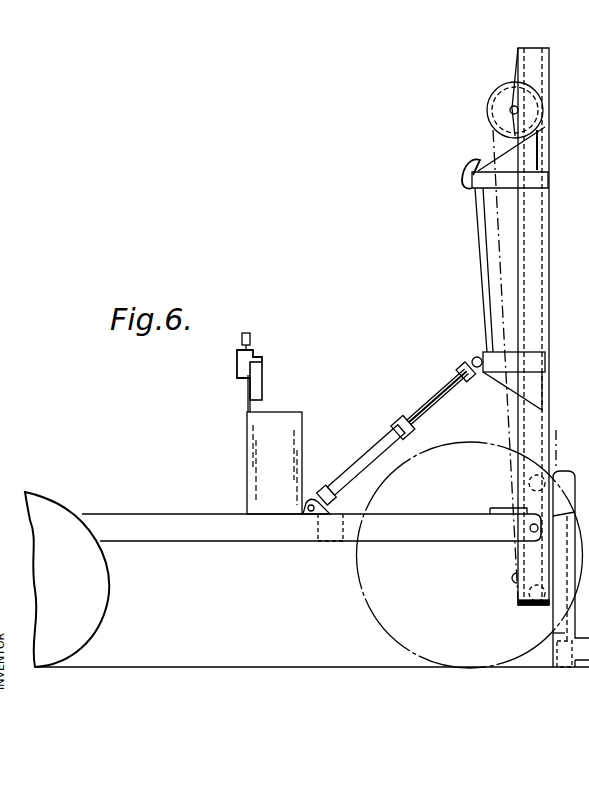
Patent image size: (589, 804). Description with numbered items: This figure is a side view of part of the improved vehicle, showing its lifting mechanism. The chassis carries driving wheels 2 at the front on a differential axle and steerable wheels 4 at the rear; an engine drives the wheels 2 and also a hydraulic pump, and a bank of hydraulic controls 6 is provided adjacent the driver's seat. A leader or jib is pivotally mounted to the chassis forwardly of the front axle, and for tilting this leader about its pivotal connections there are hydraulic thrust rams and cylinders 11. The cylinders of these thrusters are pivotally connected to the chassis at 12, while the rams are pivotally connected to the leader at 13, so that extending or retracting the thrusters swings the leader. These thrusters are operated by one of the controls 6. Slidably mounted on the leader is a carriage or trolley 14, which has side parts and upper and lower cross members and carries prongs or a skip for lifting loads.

The driving wheels 2 is at (375, 598).
The steerable wheels 4 is at (45, 505).
The hydraulic controls 6 is at (250, 347).
The hydraulic thrust rams and cylinders 11 is at (375, 451).
The pivotal connection of cylinders to chassis 12 is at (318, 496).
The pivotal connection of rams to leader 13 is at (474, 360).
The carriage or trolley 14 is at (578, 492).